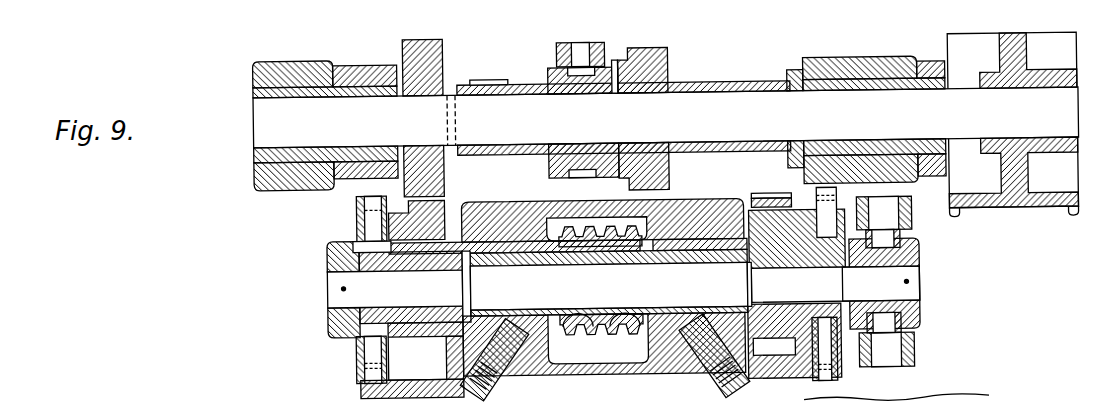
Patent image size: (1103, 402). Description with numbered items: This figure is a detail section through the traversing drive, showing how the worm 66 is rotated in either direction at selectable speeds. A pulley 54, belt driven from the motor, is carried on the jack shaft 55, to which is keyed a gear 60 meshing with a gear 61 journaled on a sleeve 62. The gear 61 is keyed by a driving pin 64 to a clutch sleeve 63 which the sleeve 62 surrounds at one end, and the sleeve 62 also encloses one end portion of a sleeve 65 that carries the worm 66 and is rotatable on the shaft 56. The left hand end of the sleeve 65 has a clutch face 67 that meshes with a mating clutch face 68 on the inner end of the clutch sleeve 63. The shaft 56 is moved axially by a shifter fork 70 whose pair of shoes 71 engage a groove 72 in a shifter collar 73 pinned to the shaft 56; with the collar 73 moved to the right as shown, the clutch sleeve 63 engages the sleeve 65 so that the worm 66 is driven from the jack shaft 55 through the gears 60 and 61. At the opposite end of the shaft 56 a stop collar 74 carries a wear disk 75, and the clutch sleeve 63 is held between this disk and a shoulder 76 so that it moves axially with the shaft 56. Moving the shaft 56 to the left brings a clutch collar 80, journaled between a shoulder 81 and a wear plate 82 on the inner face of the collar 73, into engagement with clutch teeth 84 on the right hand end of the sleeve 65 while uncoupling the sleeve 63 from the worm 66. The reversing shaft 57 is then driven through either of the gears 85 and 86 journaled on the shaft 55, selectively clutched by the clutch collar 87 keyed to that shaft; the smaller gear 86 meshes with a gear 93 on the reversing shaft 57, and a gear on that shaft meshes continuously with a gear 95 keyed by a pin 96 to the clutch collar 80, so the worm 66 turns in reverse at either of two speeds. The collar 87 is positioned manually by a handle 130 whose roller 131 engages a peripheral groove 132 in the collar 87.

The pulley 54 is at (1047, 220).
The jack shaft 55 is at (878, 108).
The shaft 56 is at (609, 286).
The reversing shaft 57 is at (943, 401).
The gear 60 is at (433, 76).
The gear 61 is at (450, 238).
The sleeve 62 is at (463, 236).
The clutch sleeve 63 is at (372, 259).
The driving pin 64 is at (365, 224).
The sleeve 65 is at (577, 270).
The worm 66 is at (584, 357).
The clutch face 67 is at (468, 259).
The clutch face 68 is at (455, 262).
The shifter fork 70 is at (912, 226).
The shoes 71 is at (897, 242).
The groove 72 is at (838, 352).
The shifter collar 73 is at (913, 266).
The stop collar 74 is at (326, 328).
The wear disk 75 is at (358, 342).
The shoulder 76 is at (466, 292).
The clutch collar 80 is at (835, 284).
The shoulder 81 is at (746, 276).
The wear plate 82 is at (874, 283).
The clutch teeth 84 is at (713, 302).
The gear 85 is at (656, 78).
The gear 86 is at (493, 84).
The clutch collar 87 is at (616, 70).
The gear 93 is at (604, 357).
The gear 95 is at (764, 200).
The pin 96 is at (814, 200).
The handle 130 is at (563, 66).
The roller 131 is at (584, 82).
The peripheral groove 132 is at (584, 170).